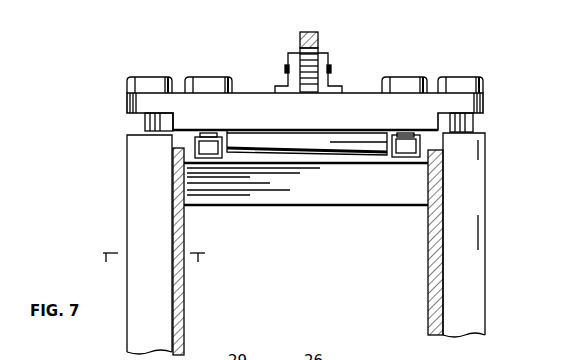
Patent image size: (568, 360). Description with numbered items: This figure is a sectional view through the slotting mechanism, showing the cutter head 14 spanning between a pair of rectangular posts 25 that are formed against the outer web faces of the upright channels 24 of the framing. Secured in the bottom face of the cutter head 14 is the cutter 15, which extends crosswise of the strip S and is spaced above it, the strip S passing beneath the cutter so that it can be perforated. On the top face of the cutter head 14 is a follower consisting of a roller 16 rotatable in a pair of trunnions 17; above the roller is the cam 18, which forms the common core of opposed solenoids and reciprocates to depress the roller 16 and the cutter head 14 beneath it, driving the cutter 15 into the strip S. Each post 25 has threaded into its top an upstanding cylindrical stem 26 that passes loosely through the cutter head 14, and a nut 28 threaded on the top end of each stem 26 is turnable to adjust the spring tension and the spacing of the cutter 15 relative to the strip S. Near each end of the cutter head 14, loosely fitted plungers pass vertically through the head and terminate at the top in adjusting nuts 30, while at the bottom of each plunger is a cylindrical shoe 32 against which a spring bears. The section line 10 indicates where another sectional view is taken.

The section line 10 is at (154, 267).
The cutter head 14 is at (152, 106).
The cutter 15 is at (250, 130).
The roller 16 is at (312, 58).
The trunnions 17 is at (292, 60).
The cam 18 is at (310, 35).
The upright channels 24 is at (183, 321).
The rectangular posts 25 is at (132, 205).
The cylindrical stem 26 is at (148, 125).
The nut 28 is at (130, 85).
The adjusting nuts 30 is at (190, 85).
The cylindrical shoe 32 is at (411, 160).
The strip S is at (332, 168).